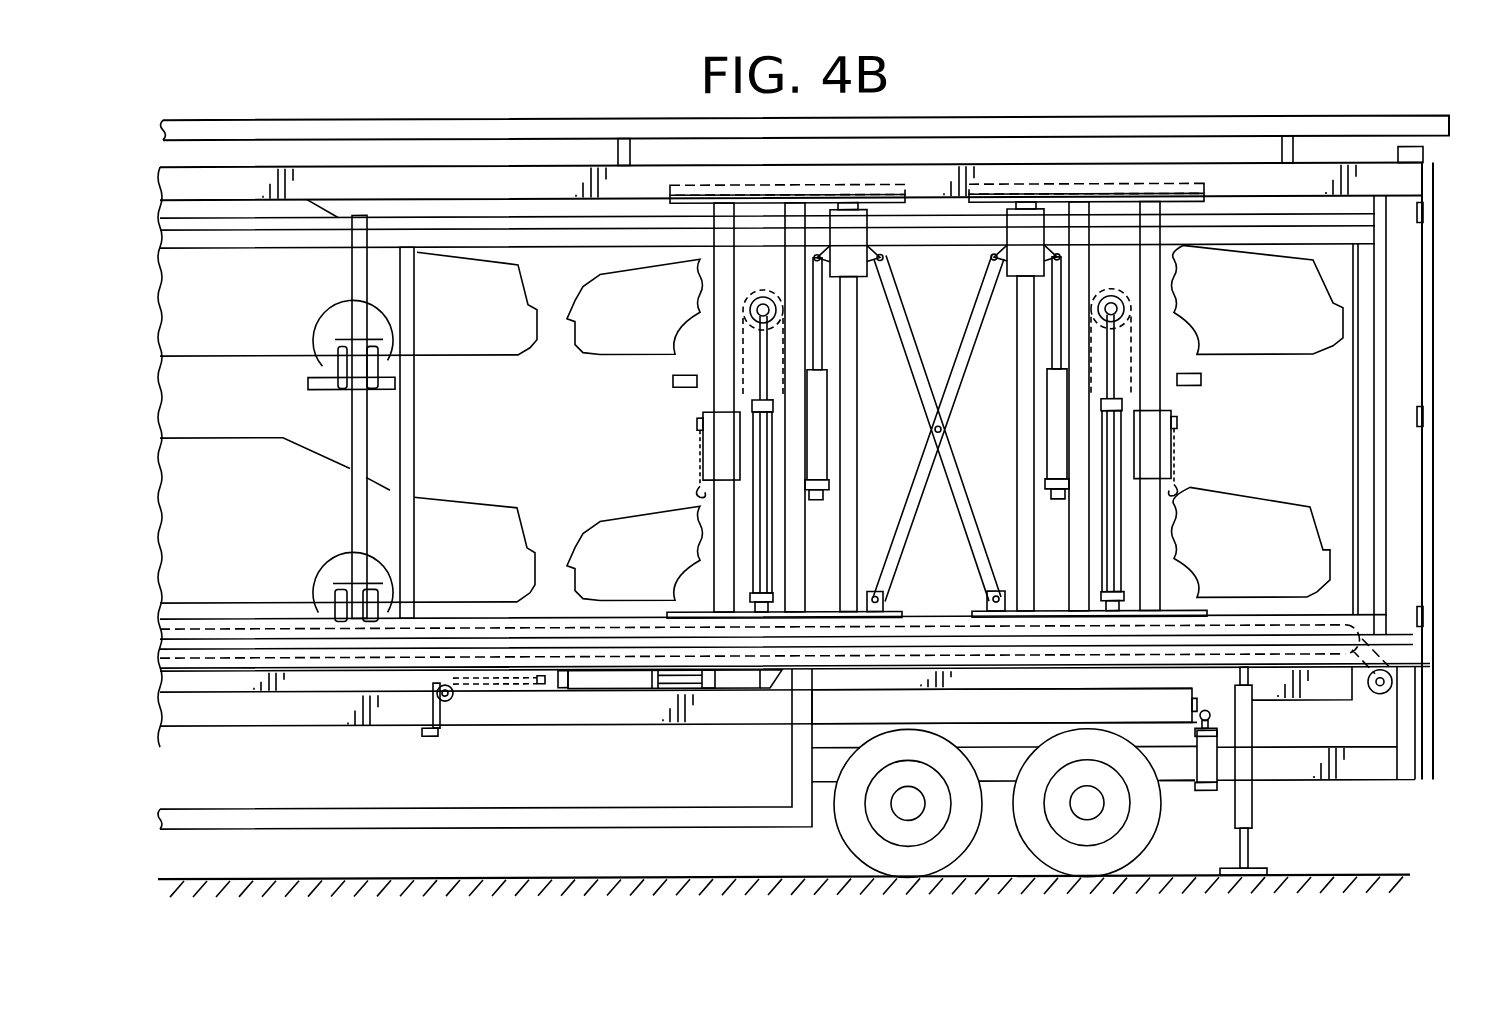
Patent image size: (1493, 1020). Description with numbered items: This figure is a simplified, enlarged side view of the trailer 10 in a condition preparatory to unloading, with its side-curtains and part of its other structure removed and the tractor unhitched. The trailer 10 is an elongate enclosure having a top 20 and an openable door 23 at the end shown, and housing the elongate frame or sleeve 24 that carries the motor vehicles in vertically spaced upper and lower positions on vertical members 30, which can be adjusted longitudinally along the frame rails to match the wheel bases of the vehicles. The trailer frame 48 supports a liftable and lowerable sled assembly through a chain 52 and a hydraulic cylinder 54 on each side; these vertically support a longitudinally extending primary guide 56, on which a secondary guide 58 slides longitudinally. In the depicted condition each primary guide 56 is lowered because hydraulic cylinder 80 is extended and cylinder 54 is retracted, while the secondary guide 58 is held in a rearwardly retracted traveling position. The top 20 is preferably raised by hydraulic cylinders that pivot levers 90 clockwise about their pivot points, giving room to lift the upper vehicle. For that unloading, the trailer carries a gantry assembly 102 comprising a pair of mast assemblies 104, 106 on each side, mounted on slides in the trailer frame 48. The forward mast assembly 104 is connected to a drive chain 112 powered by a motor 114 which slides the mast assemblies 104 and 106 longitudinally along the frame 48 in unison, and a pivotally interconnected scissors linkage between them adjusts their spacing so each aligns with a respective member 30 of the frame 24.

The trailer 10 is at (1020, 99).
The top 20 is at (505, 118).
The openable door 23 is at (1436, 345).
The elongate frame or sleeve 24 is at (248, 244).
The vertical member 30 is at (352, 419).
The trailer frame 48 is at (433, 176).
The chain 52 is at (437, 710).
The hydraulic cylinder 54 is at (1218, 766).
The primary guide 56 is at (313, 715).
The secondary guide 58 is at (235, 682).
The hydraulic cylinder 80 is at (735, 683).
The lever 90 is at (1281, 147).
The gantry assembly 102 is at (1188, 447).
The forward mast assembly 104 is at (712, 392).
The mast assembly 106 is at (1165, 399).
The drive chain 112 is at (1037, 659).
The motor 114 is at (1371, 696).